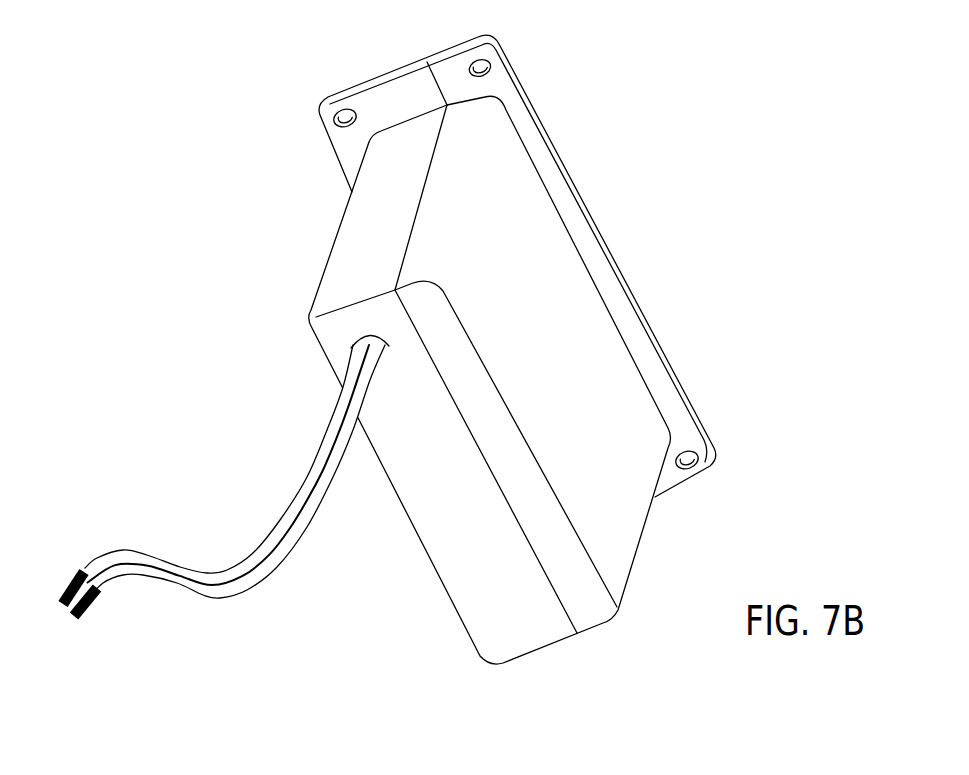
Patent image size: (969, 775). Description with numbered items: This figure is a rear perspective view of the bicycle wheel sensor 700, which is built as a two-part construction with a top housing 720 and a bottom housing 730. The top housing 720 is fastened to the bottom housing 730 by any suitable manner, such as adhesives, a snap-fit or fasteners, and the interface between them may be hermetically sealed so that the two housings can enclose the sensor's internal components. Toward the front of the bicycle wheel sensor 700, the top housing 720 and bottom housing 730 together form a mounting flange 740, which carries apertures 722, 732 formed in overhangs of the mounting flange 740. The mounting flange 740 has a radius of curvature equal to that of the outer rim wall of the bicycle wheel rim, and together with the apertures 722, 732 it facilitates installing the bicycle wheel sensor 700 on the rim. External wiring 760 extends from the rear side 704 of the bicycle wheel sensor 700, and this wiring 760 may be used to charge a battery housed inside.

The bicycle wheel sensor 700 is at (654, 233).
The rear side 704 is at (588, 600).
The top housing 720 is at (572, 348).
The aperture 722 is at (486, 72).
The bottom housing 730 is at (345, 250).
The aperture 732 is at (334, 118).
The mounting flange 740 is at (543, 157).
The external wiring 760 is at (277, 560).